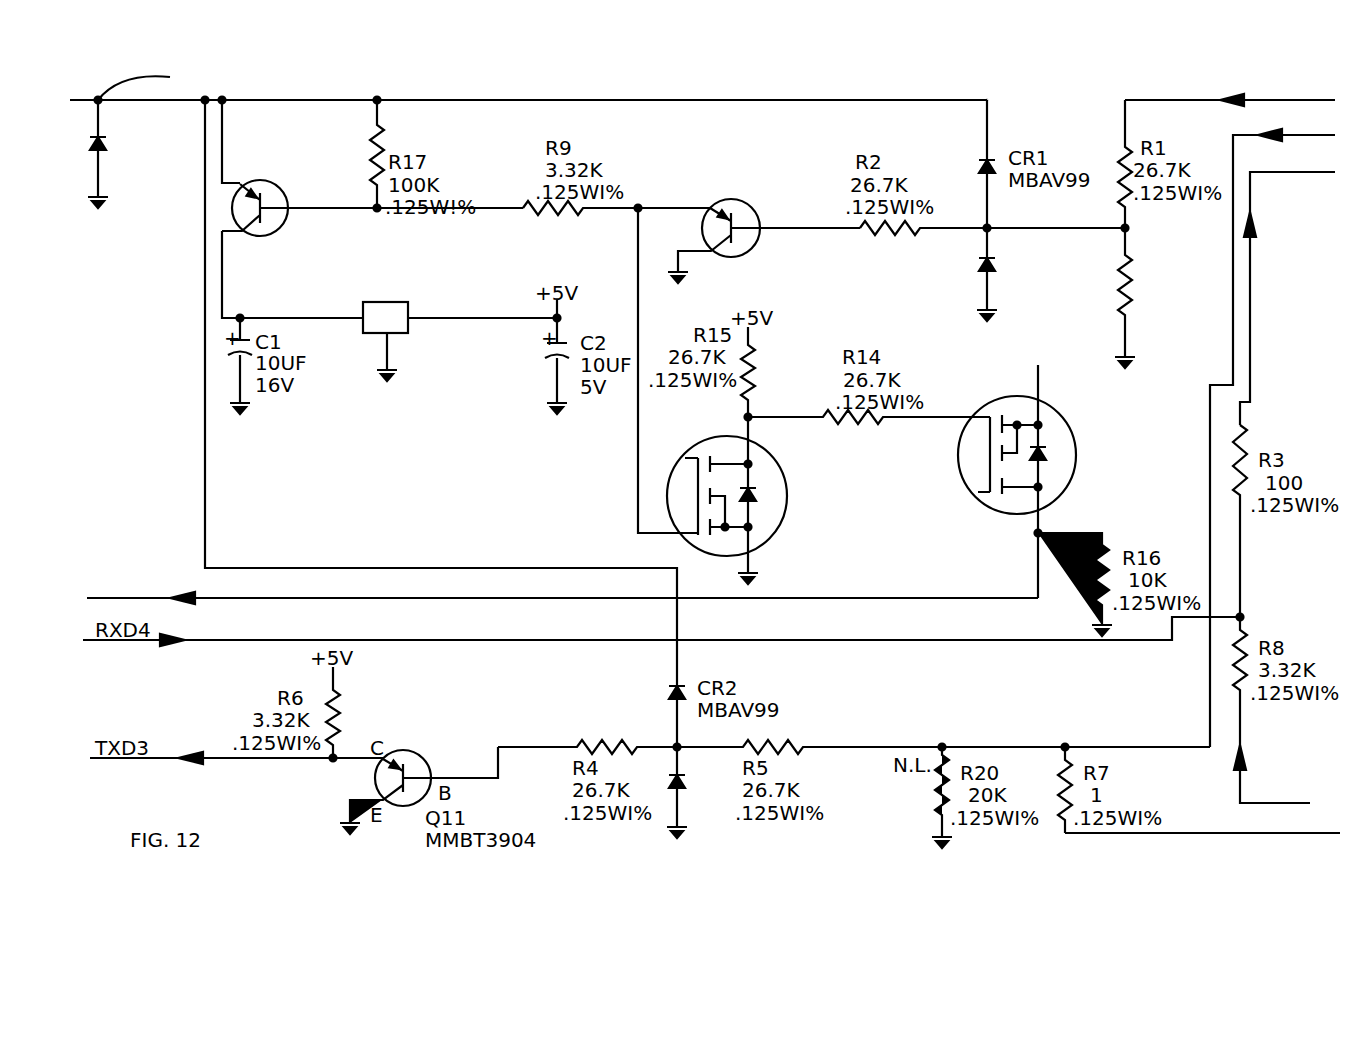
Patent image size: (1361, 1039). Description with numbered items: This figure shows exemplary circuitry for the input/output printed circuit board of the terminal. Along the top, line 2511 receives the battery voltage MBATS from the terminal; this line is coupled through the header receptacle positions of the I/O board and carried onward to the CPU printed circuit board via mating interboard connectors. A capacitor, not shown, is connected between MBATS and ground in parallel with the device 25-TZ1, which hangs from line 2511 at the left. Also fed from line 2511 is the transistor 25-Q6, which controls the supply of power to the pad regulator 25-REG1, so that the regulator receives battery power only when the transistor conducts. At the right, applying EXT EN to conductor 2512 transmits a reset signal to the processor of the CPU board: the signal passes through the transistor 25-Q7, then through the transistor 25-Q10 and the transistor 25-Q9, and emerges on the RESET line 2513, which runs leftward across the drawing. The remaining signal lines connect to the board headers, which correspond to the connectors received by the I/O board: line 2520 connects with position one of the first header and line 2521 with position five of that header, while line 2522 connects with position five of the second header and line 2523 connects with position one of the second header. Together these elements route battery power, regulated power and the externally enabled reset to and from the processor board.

The line 2511 is at (430, 100).
The conductor 2512 is at (1185, 100).
The RESET line 2513 is at (470, 599).
The line 2520 is at (1233, 292).
The line 2521 is at (1252, 250).
The line 2522 is at (1279, 755).
The line 2523 is at (1063, 833).
The transient suppressor 25-TZ1 is at (92, 142).
The transistor 25-Q6 is at (282, 181).
The pad regulator 25-REG1 is at (386, 302).
The transistor 25-Q7 is at (750, 201).
The transistor 25-Q10 is at (782, 508).
The transistor 25-Q9 is at (1075, 470).